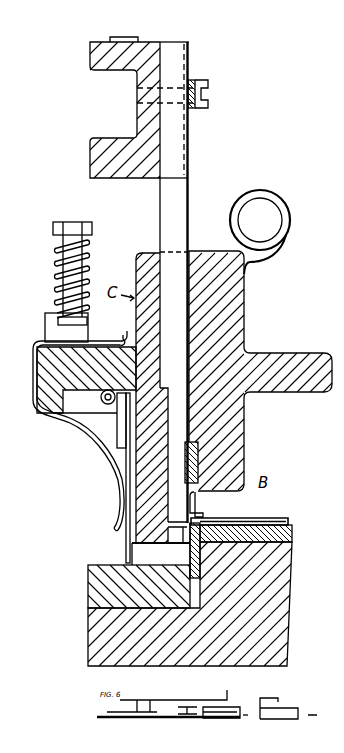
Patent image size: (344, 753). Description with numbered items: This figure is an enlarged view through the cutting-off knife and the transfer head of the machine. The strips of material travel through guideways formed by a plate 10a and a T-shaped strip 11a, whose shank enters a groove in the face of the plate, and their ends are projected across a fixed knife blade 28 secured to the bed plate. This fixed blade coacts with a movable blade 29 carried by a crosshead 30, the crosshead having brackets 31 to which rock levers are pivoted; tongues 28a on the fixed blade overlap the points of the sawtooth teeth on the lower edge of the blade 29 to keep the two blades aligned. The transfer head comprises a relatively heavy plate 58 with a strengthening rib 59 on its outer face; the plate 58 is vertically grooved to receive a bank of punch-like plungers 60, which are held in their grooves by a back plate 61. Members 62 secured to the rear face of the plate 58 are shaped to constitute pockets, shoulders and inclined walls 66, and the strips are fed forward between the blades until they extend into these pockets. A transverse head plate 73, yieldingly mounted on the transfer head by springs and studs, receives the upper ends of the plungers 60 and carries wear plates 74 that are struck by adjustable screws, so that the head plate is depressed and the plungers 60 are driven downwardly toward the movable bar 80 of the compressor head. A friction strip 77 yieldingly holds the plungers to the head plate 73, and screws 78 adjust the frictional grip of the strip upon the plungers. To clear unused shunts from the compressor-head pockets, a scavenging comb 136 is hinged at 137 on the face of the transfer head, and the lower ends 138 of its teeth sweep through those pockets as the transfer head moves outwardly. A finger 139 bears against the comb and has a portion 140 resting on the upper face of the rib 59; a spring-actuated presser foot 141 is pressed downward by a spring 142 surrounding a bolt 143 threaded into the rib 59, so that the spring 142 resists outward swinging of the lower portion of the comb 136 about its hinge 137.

The plate 10a is at (293, 531).
The strip 11a is at (270, 516).
The fixed knife blade 28 is at (290, 562).
The tongues 28a is at (200, 519).
The movable blade 29 is at (195, 480).
The crosshead 30 is at (228, 432).
The brackets 31 is at (286, 243).
The plate 58 is at (140, 256).
The strengthening rib 59 is at (53, 408).
The plungers 60 is at (180, 223).
The back plate 61 is at (200, 316).
The latch 62 is at (201, 504).
The inclined walls 66 is at (161, 483).
The head plate 73 is at (150, 132).
The wear plates 74 is at (116, 36).
The friction strip 77 is at (205, 82).
The adjusting screws 78 is at (208, 102).
The movable bar 80 is at (98, 598).
The scavenging comb 136 is at (124, 462).
The hinge 137 is at (105, 403).
The lower ends of the teeth 138 is at (125, 558).
The finger 139 is at (100, 457).
The portion 140 is at (113, 340).
The presser foot 141 is at (70, 328).
The spring 142 is at (68, 291).
The bolt 143 is at (65, 271).